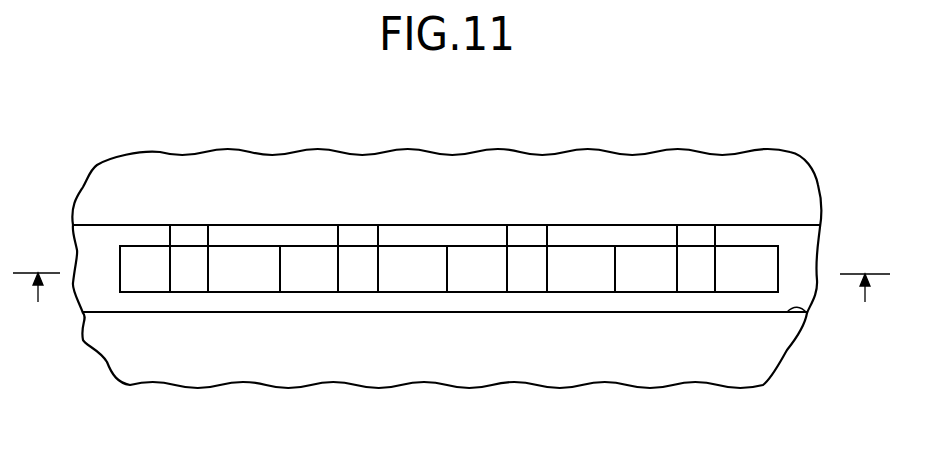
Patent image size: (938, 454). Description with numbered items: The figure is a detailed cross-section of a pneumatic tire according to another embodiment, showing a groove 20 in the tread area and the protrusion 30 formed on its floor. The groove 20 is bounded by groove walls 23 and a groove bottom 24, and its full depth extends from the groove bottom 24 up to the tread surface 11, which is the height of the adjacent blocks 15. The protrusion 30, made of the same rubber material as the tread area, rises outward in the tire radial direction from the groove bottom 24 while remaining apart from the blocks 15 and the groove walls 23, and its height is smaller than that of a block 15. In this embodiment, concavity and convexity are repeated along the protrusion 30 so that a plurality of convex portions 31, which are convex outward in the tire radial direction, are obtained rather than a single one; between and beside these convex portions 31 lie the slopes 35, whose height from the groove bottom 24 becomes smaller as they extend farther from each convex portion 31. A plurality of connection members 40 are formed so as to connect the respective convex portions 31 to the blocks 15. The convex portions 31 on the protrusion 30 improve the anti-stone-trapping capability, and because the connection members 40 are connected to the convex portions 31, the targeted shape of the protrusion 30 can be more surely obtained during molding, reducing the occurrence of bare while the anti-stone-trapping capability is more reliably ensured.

The tread surface 11 is at (350, 176).
The block 15 is at (547, 176).
The groove 20 is at (110, 295).
The groove wall 23 is at (780, 228).
The groove bottom 24 is at (798, 255).
The protrusion 30 is at (119, 257).
The convex portion 31 is at (193, 279).
The slope 35 is at (146, 279).
The connection member 40 is at (190, 236).